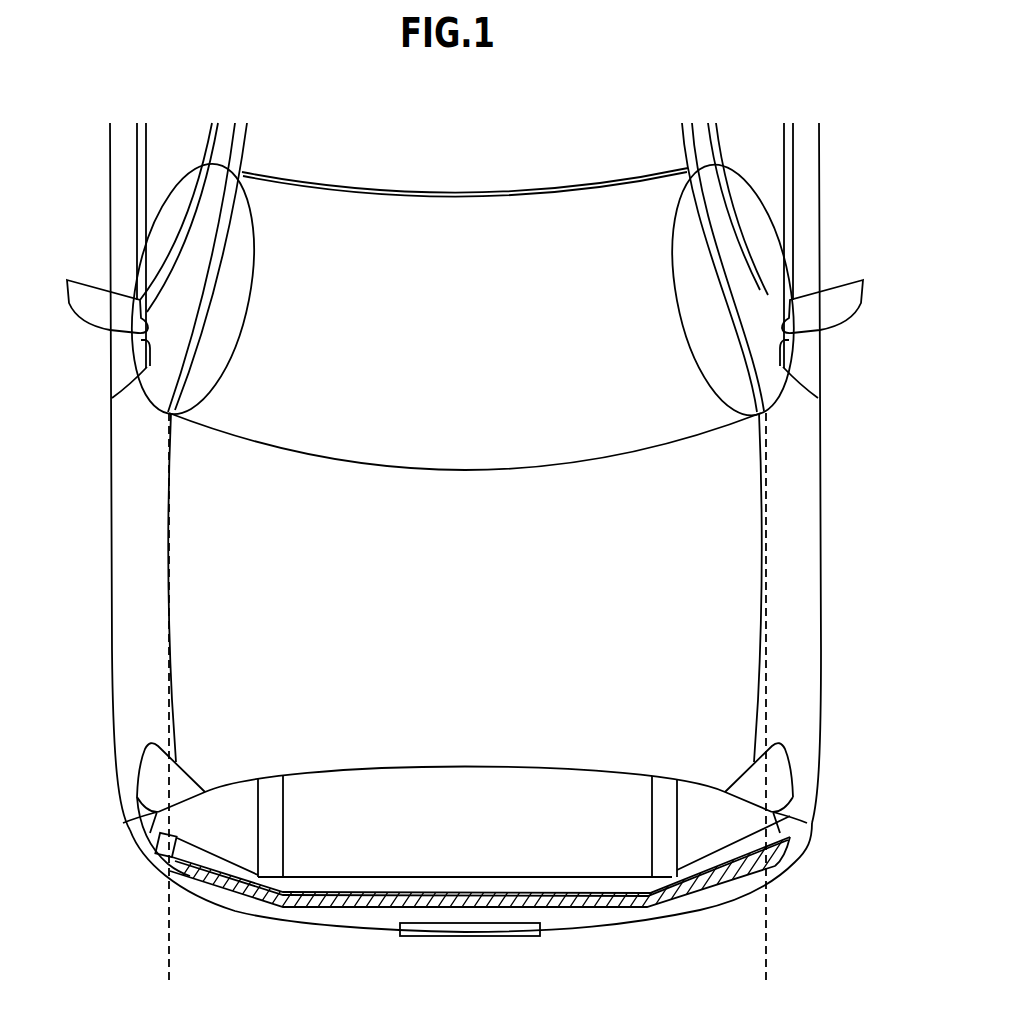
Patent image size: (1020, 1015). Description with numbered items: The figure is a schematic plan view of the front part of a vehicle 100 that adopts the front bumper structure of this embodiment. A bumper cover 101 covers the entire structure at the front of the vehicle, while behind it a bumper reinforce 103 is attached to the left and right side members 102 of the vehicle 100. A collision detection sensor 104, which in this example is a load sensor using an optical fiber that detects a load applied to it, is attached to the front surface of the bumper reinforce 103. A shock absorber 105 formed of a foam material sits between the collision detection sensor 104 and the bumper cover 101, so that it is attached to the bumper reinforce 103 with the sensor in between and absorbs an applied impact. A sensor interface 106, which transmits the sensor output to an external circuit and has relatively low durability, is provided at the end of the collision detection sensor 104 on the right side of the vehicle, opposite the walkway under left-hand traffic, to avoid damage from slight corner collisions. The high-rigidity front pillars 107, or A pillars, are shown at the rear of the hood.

The vehicle 100 is at (101, 634).
The bumper cover 101 is at (636, 924).
The side members 102 is at (282, 813).
The bumper reinforce 103 is at (387, 884).
The collision detection sensor 104 is at (168, 878).
The shock absorber 105 is at (238, 890).
The sensor interface 106 is at (158, 845).
The front pillars 107 is at (170, 354).